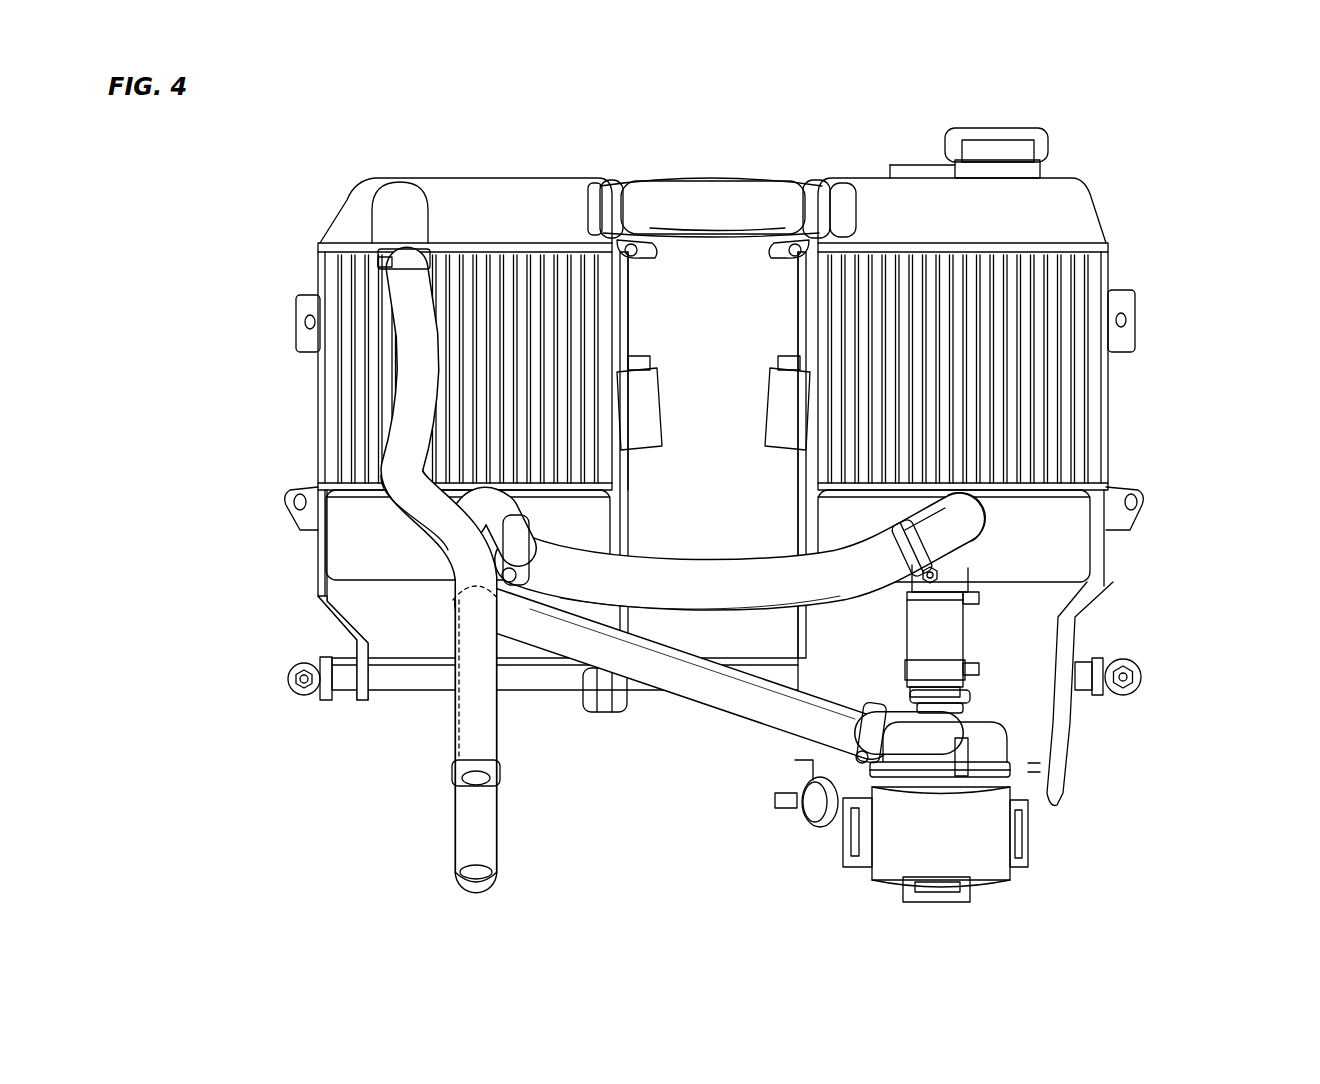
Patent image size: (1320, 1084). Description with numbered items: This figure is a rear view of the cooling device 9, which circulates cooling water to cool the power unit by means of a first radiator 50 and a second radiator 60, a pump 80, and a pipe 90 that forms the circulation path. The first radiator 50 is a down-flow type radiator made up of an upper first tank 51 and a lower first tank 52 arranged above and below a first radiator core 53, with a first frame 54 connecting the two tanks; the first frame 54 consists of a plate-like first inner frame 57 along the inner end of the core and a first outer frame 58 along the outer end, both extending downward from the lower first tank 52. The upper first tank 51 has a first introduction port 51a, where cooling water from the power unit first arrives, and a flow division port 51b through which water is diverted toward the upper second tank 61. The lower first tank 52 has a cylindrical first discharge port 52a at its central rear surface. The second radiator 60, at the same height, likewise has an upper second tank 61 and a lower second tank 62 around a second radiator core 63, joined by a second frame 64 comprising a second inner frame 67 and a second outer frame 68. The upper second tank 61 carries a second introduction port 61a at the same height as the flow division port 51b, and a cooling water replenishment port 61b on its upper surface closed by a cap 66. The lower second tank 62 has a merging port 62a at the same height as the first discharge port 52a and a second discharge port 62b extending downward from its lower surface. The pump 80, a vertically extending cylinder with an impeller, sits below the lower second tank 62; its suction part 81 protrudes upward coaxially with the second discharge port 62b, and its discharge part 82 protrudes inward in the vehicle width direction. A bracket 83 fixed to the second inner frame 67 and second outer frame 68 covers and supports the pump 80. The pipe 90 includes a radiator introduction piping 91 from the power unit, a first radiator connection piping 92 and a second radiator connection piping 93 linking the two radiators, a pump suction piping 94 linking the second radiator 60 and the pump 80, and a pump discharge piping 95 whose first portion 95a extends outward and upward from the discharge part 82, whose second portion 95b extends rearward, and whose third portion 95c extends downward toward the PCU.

The cooling device 9 is at (1232, 160).
The first radiator 50 is at (335, 212).
The upper first tank 51 is at (485, 196).
The first introduction port 51a is at (380, 210).
The flow division port 51b is at (588, 206).
The lower first tank 52 is at (360, 567).
The first discharge port 52a is at (505, 514).
The first radiator core 53 is at (355, 396).
The first frame 54 is at (688, 371).
The first inner frame 57 is at (622, 322).
The first outer frame 58 is at (320, 442).
The second radiator 60 is at (1082, 190).
The upper second tank 61 is at (875, 200).
The second introduction port 61a is at (830, 206).
The cooling water replenishment port 61b is at (1012, 160).
The lower second tank 62 is at (1060, 566).
The merging port 62a is at (960, 520).
The second discharge port 62b is at (945, 566).
The second radiator core 63 is at (1035, 400).
The second frame 64 is at (713, 403).
The cap 66 is at (956, 130).
The second inner frame 67 is at (812, 462).
The second outer frame 68 is at (1115, 446).
The pump 80 is at (867, 878).
The suction part 81 is at (950, 712).
The discharge part 82 is at (902, 716).
The bracket 83 is at (1028, 850).
The pipe 90 is at (388, 332).
The radiator introduction piping 91 is at (410, 516).
The first radiator connection piping 92 is at (715, 196).
The second radiator connection piping 93 is at (758, 572).
The pump suction piping 94 is at (960, 632).
The pump discharge piping 95 is at (673, 715).
The first portion 95a is at (680, 690).
The second portion 95b is at (465, 590).
The third portion 95c is at (470, 855).